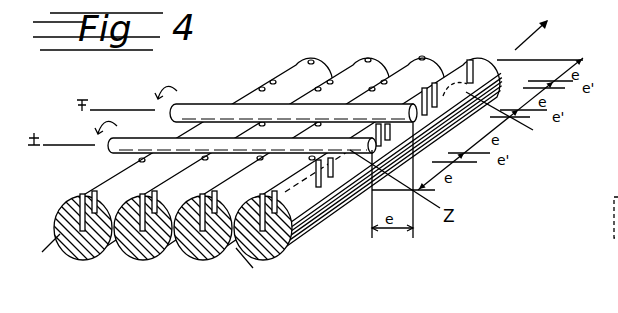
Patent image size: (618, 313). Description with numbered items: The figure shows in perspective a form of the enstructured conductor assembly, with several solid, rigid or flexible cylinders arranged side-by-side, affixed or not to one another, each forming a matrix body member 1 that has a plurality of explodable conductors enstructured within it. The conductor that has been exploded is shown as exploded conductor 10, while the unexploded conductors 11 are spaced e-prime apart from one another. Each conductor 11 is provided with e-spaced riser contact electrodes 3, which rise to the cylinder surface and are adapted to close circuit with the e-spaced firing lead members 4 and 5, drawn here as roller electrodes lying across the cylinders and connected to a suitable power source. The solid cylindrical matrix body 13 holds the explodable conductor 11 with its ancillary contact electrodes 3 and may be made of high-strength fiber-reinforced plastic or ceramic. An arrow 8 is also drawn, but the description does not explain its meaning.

The matrix body member 1 is at (201, 262).
The riser contact electrode 3 is at (465, 57).
The firing lead member 4 is at (189, 112).
The firing lead member 5 is at (108, 147).
The direction arrow 8 is at (538, 35).
The exploded conductor 10 is at (511, 117).
The unexploded conductor 11 is at (302, 200).
The cylindrical matrix body 13 is at (303, 232).